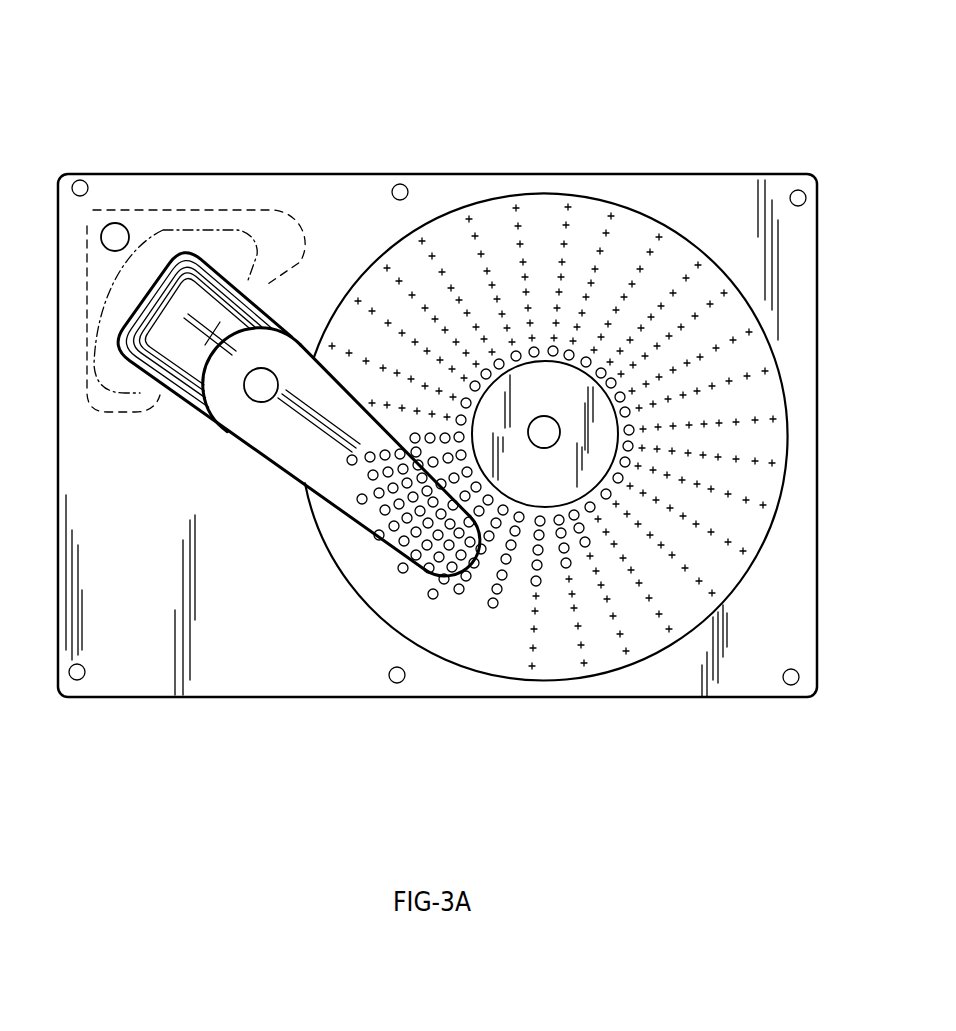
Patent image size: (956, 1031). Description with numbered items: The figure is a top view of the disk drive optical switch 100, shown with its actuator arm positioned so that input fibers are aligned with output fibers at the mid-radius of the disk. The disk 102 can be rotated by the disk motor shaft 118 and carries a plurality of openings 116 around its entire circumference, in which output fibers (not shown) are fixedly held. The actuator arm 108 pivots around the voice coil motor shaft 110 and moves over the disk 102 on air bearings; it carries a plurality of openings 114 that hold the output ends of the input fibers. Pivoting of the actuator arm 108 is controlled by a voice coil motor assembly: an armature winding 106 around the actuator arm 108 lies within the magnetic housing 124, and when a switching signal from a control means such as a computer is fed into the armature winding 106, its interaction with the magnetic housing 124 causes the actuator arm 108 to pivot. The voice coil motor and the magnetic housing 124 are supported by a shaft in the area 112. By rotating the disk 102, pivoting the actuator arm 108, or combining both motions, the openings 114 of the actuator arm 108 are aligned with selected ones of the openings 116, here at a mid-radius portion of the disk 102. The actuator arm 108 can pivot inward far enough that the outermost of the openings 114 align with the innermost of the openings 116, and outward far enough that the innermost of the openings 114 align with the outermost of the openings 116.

The disk drive optical switch 100 is at (476, 139).
The disk 102 is at (628, 227).
The armature winding 106 is at (164, 287).
The actuator arm 108 is at (327, 473).
The voice coil motor shaft 110 is at (259, 378).
The area supporting the voice coil motor and magnetic housing 112 is at (113, 231).
The openings in actuator arm 114 is at (403, 548).
The openings in disk 116 is at (458, 623).
The disk motor shaft 118 is at (545, 430).
The magnetic housing 124 is at (187, 243).